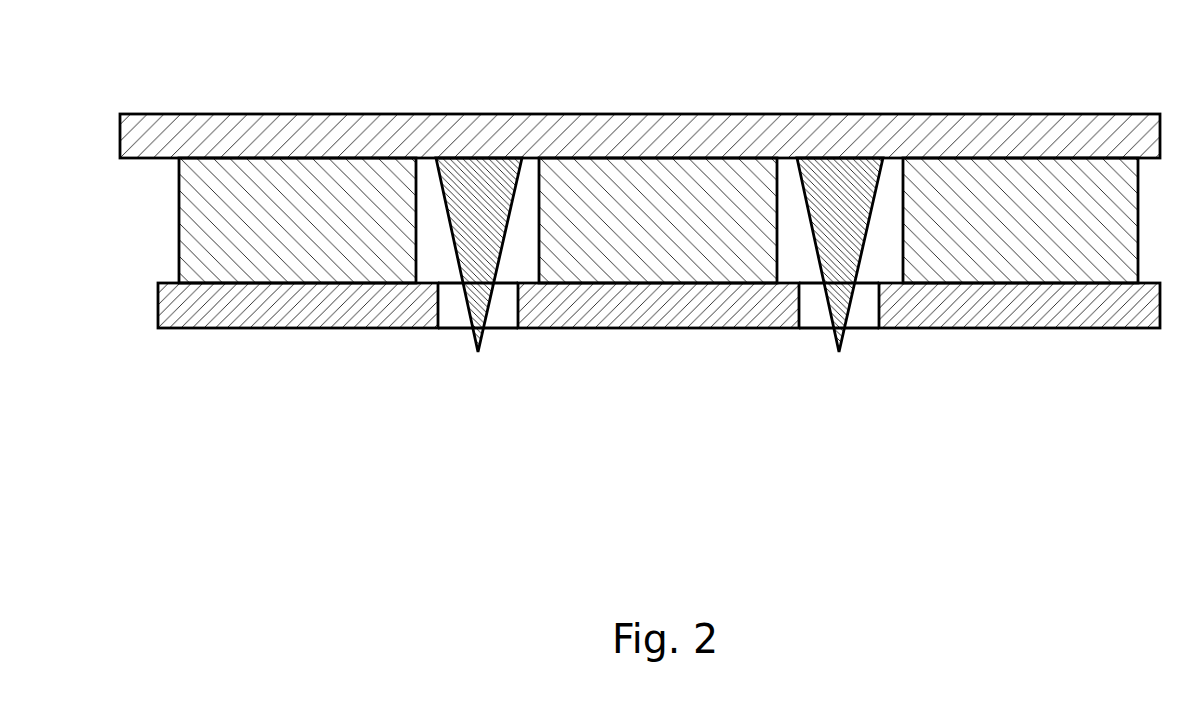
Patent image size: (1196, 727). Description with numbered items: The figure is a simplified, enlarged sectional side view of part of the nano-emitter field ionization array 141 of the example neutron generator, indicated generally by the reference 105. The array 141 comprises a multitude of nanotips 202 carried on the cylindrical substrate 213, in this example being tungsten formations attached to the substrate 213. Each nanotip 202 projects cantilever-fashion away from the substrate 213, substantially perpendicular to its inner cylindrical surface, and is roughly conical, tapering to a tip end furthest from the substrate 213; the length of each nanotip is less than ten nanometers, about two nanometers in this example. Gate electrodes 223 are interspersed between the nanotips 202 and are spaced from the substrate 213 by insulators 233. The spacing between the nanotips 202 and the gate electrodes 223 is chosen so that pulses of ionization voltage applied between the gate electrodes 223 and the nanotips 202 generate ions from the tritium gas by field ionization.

The print head assembly 105 is at (863, 60).
The cylindrical substrate 213 is at (695, 125).
The insulator 233 is at (197, 210).
The gate electrode 223 is at (282, 313).
The nanotip 202 is at (479, 296).
The field ionization array 141 is at (764, 446).